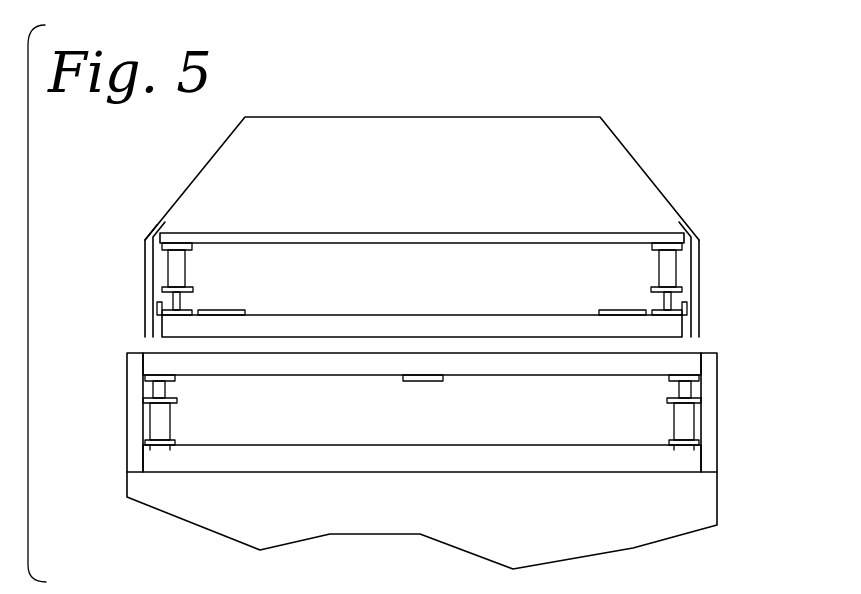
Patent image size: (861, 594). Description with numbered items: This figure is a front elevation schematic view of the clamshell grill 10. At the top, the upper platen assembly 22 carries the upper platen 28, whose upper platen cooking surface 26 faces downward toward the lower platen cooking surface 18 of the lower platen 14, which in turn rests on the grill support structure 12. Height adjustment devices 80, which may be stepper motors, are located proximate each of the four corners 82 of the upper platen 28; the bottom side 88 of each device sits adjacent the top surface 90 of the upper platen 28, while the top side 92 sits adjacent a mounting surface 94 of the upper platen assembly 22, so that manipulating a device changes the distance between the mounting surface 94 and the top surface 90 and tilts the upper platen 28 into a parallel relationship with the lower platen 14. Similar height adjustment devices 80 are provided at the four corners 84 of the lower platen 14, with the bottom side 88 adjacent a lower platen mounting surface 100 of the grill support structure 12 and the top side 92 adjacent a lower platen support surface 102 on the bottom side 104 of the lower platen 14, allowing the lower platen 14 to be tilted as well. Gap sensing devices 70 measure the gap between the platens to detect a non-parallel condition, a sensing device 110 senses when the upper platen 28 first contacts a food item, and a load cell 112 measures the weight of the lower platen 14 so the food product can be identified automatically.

The grill 10 is at (584, 67).
The grill support structure 12 is at (681, 206).
The lower platen 14 is at (150, 363).
The lower platen cooking surface 18 is at (482, 340).
The upper platen assembly 22 is at (449, 111).
The upper platen cooking surface 26 is at (384, 341).
The upper platen 28 is at (430, 327).
The gap sensing device 70 is at (158, 307).
The height adjustment device 80 is at (175, 265).
The corners of upper platen 82 is at (134, 324).
The corners of lower platen 84 is at (125, 456).
The bottom side of height adjustment device 88 is at (202, 297).
The top surface of upper platen 90 is at (482, 340).
The top side of height adjustment device 92 is at (202, 250).
The mounting surface 94 is at (178, 243).
The lower platen mounting surface 100 is at (180, 447).
The lower platen support surface 102 is at (178, 378).
The bottom side of lower platen 104 is at (363, 373).
The sensing device 110 is at (236, 310).
The load cell 112 is at (423, 382).